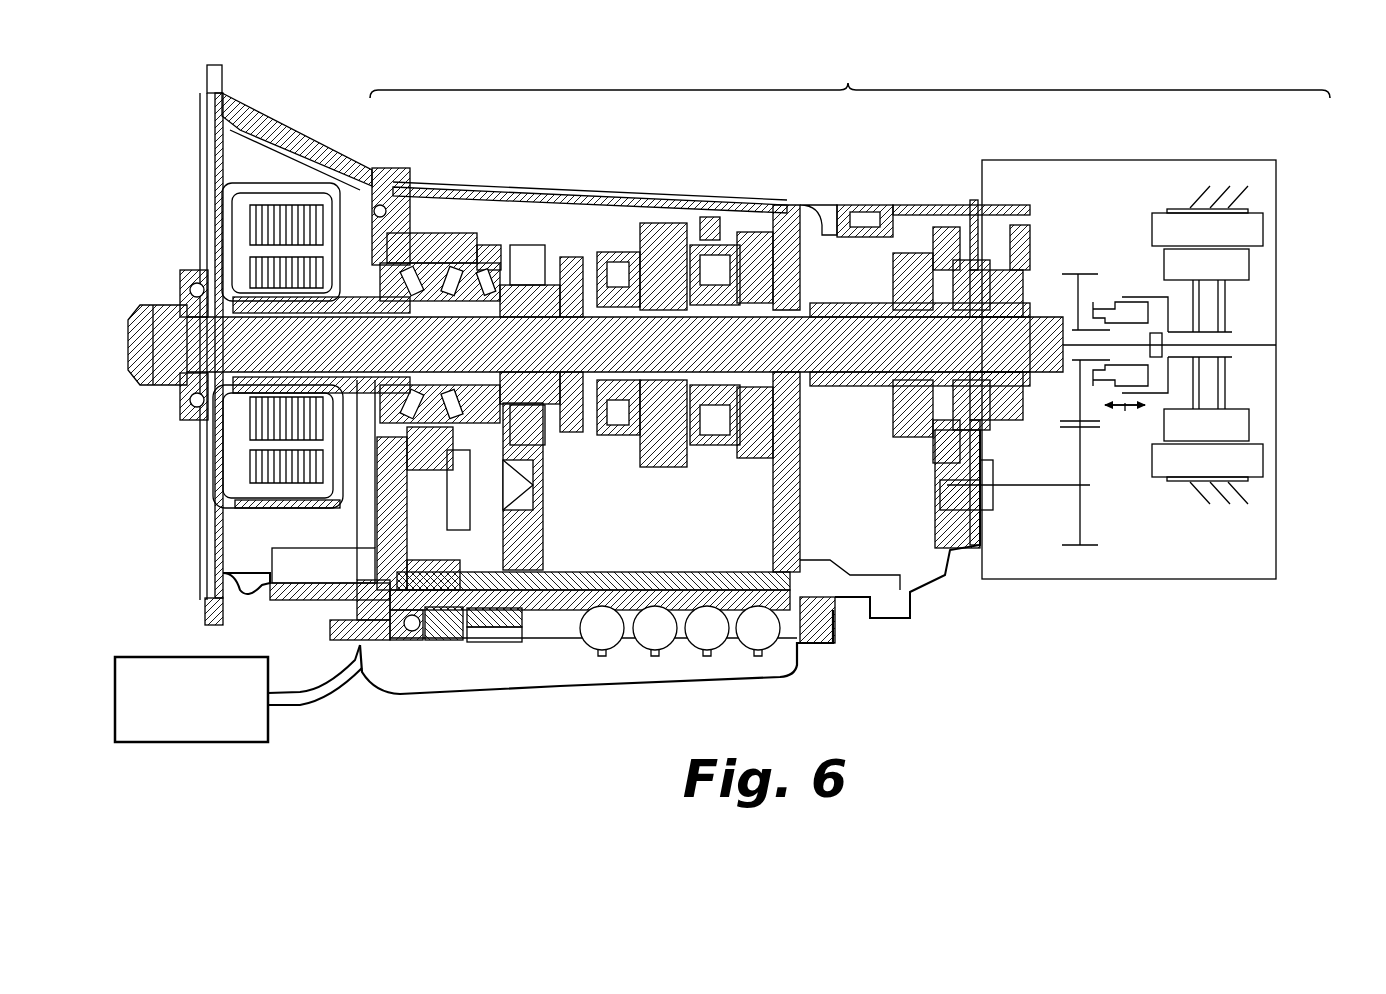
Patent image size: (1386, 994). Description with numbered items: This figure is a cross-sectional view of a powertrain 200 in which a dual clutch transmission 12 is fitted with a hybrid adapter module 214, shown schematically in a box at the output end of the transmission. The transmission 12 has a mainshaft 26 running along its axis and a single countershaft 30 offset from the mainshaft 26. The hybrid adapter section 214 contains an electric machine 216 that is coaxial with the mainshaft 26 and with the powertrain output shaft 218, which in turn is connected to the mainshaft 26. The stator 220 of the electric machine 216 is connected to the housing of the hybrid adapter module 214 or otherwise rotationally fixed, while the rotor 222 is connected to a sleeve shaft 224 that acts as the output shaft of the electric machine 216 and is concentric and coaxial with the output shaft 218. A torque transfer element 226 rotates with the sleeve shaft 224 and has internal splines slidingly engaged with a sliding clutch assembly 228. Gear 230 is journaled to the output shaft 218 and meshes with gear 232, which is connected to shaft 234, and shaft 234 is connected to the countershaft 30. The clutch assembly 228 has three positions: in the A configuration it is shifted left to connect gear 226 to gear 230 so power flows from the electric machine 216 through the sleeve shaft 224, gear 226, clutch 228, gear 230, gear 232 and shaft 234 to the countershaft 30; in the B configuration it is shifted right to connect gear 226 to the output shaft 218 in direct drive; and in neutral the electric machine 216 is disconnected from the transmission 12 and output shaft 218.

The dual clutch transmission 12 is at (638, 162).
The transmission mainshaft 26 is at (794, 357).
The countershaft 30 is at (945, 496).
The powertrain 200 is at (850, 78).
The hybrid adapter module 214 is at (1135, 160).
The electric machine 216 is at (1260, 352).
The output shaft 218 is at (1290, 345).
The stator 220 is at (1265, 229).
The rotor 222 is at (1252, 263).
The sleeve shaft 224 is at (1180, 358).
The torque transfer element 226 is at (1155, 296).
The sliding clutch assembly 228 is at (1108, 280).
The gear 230 is at (1068, 273).
The gear 232 is at (1088, 543).
The shaft 234 is at (1050, 488).